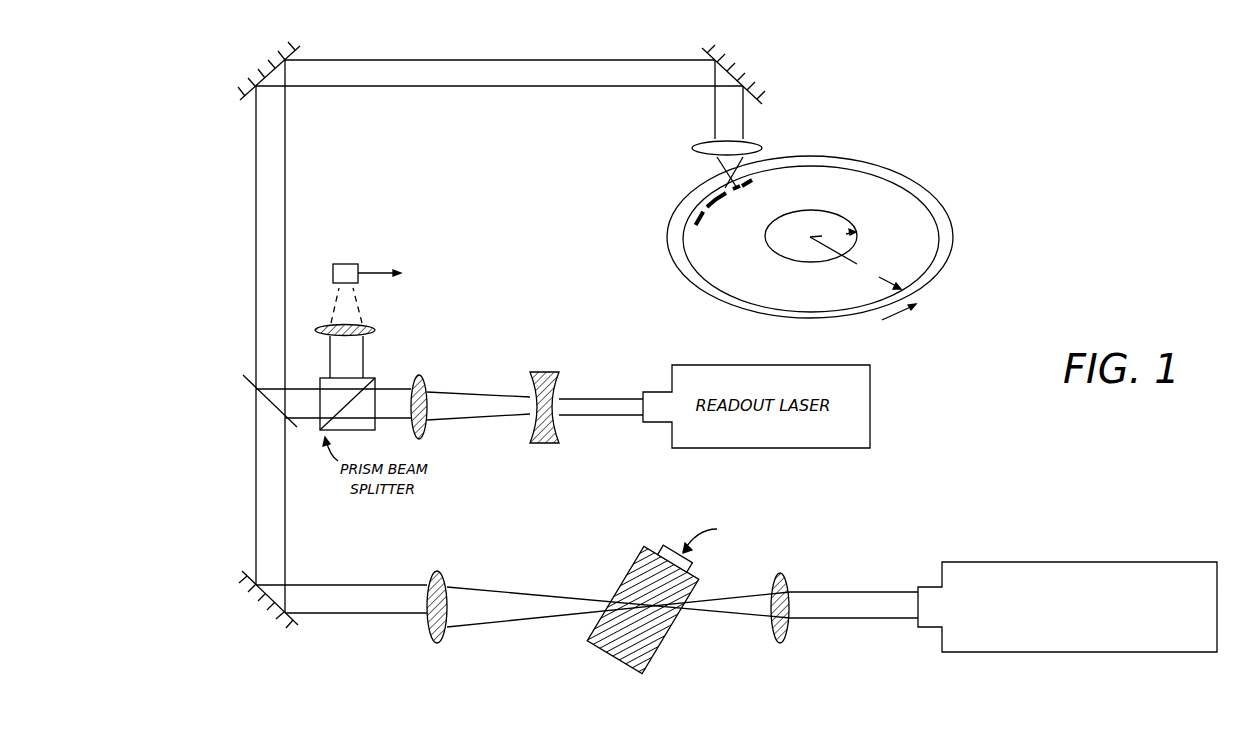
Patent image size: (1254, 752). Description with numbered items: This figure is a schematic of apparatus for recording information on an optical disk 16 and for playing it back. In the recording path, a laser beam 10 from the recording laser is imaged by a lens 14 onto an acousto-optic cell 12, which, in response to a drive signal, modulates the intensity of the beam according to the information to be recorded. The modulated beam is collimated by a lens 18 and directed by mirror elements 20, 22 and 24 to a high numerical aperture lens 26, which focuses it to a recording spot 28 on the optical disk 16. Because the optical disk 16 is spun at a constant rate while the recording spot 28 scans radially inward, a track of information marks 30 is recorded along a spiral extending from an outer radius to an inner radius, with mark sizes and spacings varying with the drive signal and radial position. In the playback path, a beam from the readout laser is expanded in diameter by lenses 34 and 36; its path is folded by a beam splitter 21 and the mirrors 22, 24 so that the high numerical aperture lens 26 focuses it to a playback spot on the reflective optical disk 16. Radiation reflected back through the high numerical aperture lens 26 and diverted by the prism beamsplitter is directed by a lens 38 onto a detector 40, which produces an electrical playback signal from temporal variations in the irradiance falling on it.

The laser beam 10 is at (850, 592).
The acousto-optic cell 12 is at (598, 650).
The lens 14 is at (789, 630).
The optical disk 16 is at (957, 223).
The lens 18 is at (431, 641).
The mirror element 20 is at (237, 578).
The beam splitter 21 is at (242, 380).
The mirror element 22 is at (243, 101).
The mirror element 24 is at (708, 51).
The high numerical aperture lens 26 is at (758, 147).
The recording spot 28 is at (735, 191).
The track of information marks 30 is at (705, 216).
The lens 34 is at (552, 372).
The lens 36 is at (421, 377).
The lens 38 is at (333, 342).
The detector 40 is at (391, 292).